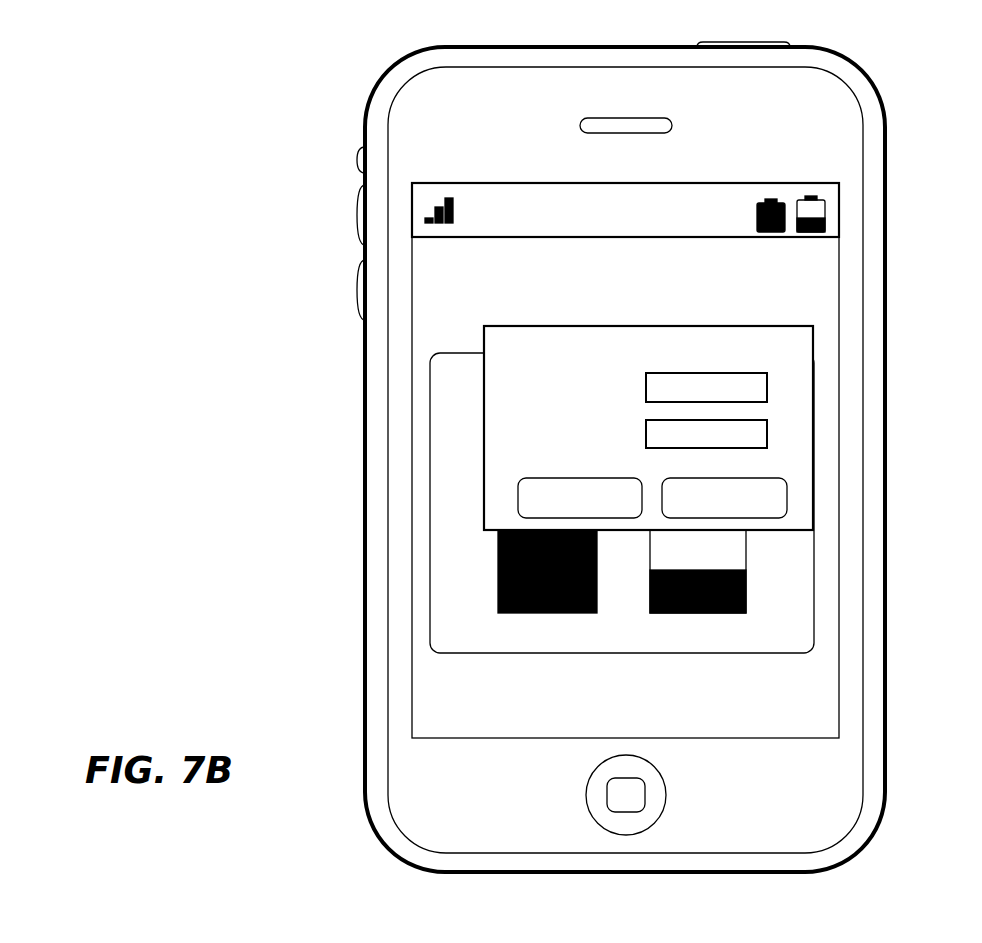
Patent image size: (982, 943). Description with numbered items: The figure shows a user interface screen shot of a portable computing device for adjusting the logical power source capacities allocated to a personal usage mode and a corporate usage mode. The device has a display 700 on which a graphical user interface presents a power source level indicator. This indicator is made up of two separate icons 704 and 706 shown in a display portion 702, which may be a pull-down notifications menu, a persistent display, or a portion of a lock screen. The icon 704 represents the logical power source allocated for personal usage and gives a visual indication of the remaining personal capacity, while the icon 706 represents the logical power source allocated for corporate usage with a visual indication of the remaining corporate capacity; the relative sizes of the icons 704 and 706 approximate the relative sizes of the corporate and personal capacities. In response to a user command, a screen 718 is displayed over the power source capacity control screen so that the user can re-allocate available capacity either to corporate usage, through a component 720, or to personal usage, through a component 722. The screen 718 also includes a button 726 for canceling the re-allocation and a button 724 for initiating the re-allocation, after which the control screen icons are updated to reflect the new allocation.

The display 700 is at (262, 114).
The display portion 702 is at (744, 159).
The icon 704 is at (750, 259).
The icon 706 is at (811, 259).
The screen 718 is at (790, 357).
The component 720 is at (723, 397).
The component 722 is at (723, 444).
The button 724 is at (805, 470).
The button 726 is at (492, 485).